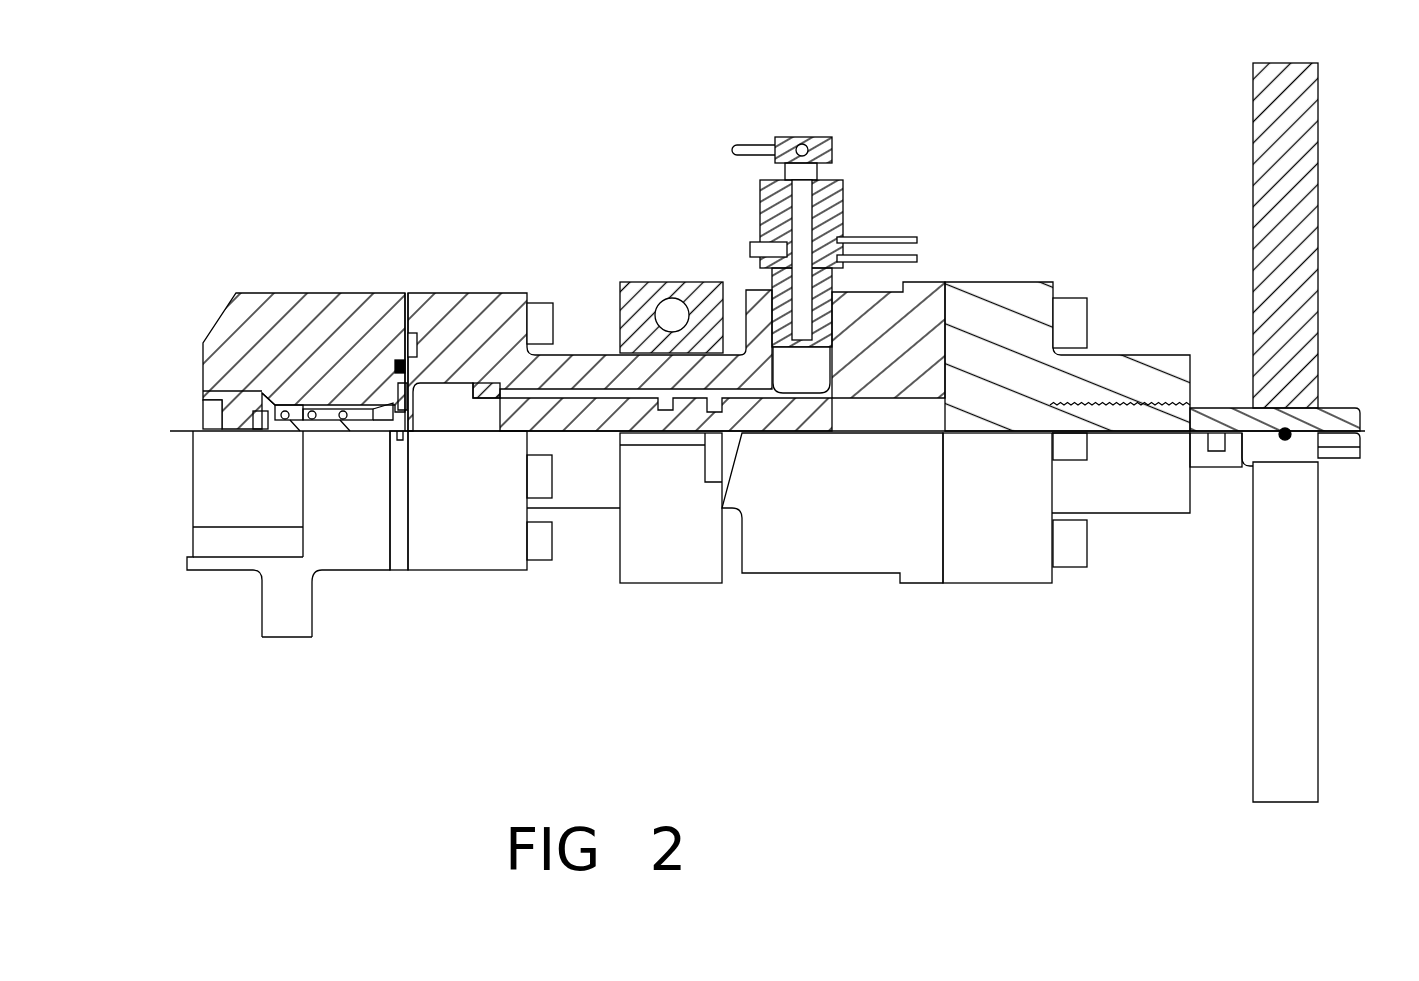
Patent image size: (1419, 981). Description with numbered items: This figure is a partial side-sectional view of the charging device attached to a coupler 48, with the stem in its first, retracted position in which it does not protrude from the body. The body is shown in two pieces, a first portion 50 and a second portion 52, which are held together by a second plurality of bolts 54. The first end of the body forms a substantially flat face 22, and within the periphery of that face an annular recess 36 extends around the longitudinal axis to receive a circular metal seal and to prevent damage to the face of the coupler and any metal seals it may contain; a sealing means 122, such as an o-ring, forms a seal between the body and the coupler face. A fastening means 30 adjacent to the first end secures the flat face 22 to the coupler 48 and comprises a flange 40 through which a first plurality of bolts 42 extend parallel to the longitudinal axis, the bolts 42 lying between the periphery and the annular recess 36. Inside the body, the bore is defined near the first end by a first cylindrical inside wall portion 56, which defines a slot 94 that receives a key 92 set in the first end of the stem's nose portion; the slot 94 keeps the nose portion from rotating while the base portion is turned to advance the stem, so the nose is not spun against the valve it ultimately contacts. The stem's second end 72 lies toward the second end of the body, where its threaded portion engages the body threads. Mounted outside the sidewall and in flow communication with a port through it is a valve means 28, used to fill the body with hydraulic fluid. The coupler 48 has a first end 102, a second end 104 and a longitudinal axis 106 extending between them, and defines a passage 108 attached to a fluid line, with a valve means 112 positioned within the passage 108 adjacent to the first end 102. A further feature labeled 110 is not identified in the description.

The substantially flat face 22 is at (401, 335).
The valve means 28 is at (840, 192).
The fastening means 30 is at (413, 334).
The annular recess 36 is at (418, 336).
The flange 40 is at (470, 570).
The first plurality of bolts 42 is at (555, 545).
The coupler 48 is at (268, 293).
The first portion 50 is at (787, 573).
The second portion 52 is at (1008, 583).
The second plurality of bolts 54 is at (1077, 300).
The first cylindrical inside wall portion 56 is at (573, 397).
The second end 72 is at (1353, 405).
The key 92 is at (488, 400).
The slot 94 is at (398, 358).
The first end 102 is at (375, 570).
The second end 104 is at (203, 573).
The longitudinal axis 106 is at (181, 431).
The passage 108 is at (323, 408).
The foot bottom 110 is at (283, 640).
The valve means 112 is at (353, 431).
The sealing means 122 is at (400, 358).